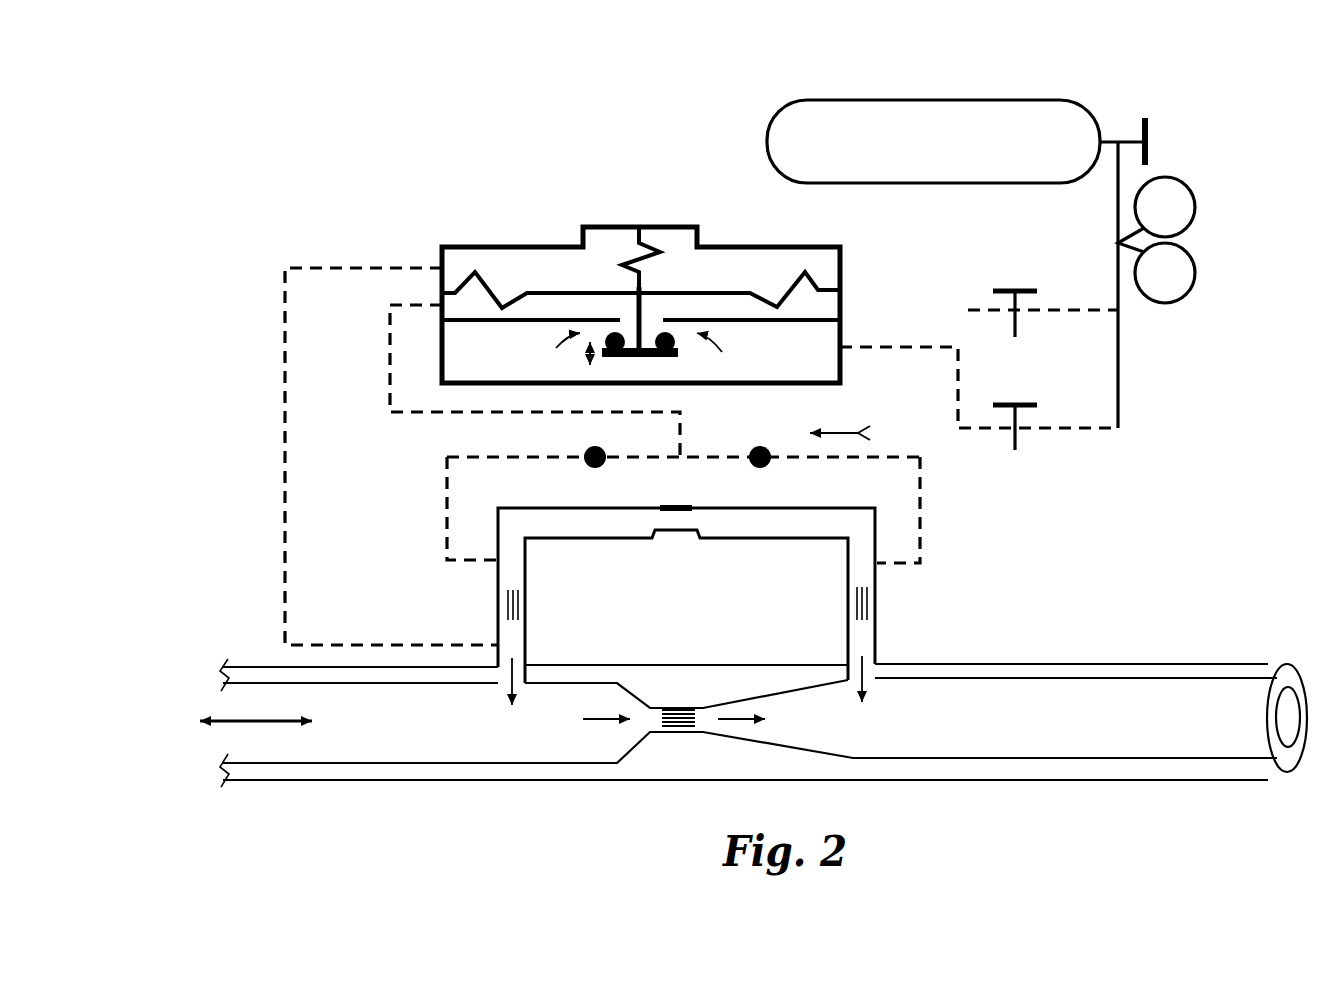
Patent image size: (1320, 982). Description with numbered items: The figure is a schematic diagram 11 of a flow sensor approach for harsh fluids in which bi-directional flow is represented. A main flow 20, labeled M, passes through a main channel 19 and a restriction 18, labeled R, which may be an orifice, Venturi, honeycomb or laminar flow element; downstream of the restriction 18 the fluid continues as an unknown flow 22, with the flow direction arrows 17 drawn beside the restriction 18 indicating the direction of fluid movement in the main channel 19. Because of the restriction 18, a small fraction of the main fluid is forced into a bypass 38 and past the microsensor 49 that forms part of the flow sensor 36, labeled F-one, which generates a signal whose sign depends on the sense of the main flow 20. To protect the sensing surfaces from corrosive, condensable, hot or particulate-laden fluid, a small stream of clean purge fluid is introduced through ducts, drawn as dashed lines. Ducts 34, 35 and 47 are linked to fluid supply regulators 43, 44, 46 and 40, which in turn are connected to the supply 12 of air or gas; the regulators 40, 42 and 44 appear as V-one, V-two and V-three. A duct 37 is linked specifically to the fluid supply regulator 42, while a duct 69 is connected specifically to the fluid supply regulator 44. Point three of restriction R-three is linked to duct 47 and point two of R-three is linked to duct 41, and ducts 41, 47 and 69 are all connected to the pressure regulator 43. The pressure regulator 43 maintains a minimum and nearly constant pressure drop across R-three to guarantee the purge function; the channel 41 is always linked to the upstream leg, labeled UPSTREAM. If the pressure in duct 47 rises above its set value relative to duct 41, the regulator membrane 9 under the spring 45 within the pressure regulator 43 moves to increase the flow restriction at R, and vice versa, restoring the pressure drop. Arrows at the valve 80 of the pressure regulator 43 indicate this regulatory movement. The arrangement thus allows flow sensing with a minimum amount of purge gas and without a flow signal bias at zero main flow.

The schematic diagram 11 is at (390, 140).
The supply 12 is at (935, 100).
The fluid supply regulator 40 is at (1180, 115).
The fluid supply regulator 46 is at (1194, 207).
The fluid supply regulator 42 is at (950, 240).
The duct 37 is at (1087, 302).
The fluid supply regulator 44 is at (1055, 490).
The duct 69 is at (925, 345).
The pressure regulator 43 is at (768, 246).
The regulator membrane 9 is at (551, 290).
The spring 45 is at (660, 258).
The valve 80 is at (652, 360).
The duct 47 is at (420, 305).
The duct 41 is at (326, 266).
The duct 34 is at (466, 455).
The duct 35 is at (897, 447).
The bypass 38 is at (852, 506).
The flow sensor 36 is at (686, 600).
The microsensor 49 is at (686, 505).
The main channel 19 is at (477, 764).
The unknown flow 22 is at (1080, 737).
The restriction 18 is at (688, 731).
The flow direction arrow 17 is at (660, 717).
The main flow 20 is at (281, 724).